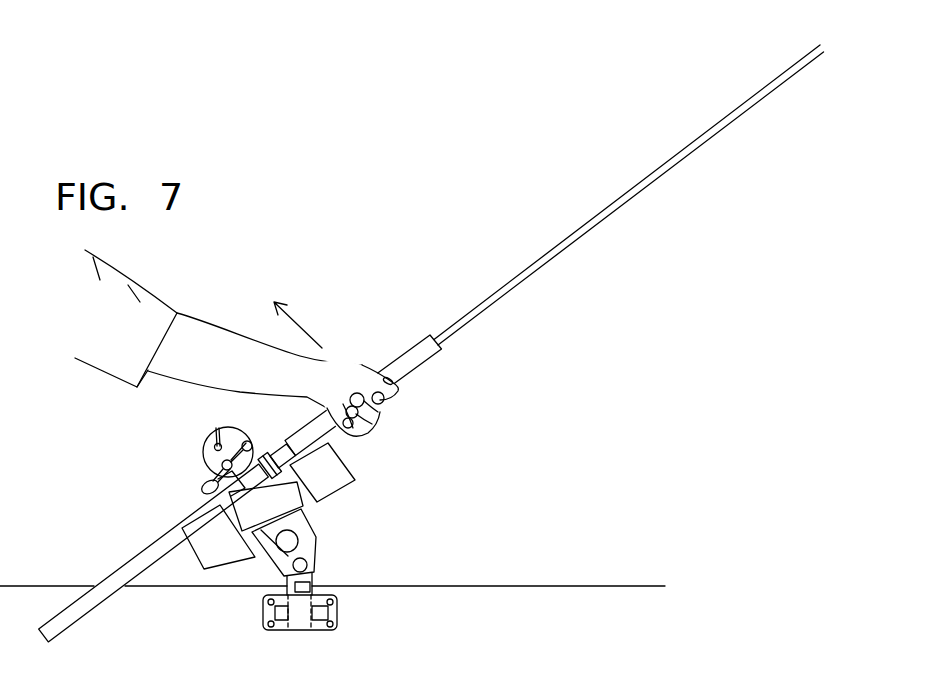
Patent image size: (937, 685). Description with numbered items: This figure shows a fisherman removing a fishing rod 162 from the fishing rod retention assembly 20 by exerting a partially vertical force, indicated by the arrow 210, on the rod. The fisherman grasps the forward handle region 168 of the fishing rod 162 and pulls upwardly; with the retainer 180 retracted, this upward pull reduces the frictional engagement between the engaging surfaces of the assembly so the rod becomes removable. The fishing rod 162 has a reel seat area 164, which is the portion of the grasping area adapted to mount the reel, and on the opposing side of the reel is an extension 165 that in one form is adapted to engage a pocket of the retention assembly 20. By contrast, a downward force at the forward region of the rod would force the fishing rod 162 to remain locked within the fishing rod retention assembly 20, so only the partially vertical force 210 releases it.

The fishing rod retention assembly 20 is at (170, 512).
The fishing rod 162 is at (423, 352).
The reel seat area 164 is at (217, 500).
The extension 165 is at (263, 493).
The forward handle region 168 is at (393, 380).
The retainer 180 is at (290, 543).
The partially vertical force 210 is at (310, 332).